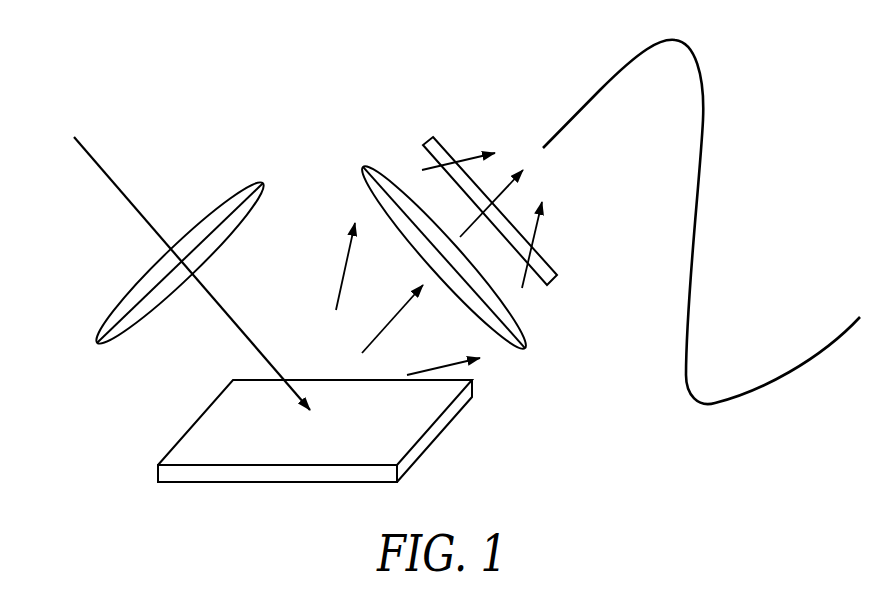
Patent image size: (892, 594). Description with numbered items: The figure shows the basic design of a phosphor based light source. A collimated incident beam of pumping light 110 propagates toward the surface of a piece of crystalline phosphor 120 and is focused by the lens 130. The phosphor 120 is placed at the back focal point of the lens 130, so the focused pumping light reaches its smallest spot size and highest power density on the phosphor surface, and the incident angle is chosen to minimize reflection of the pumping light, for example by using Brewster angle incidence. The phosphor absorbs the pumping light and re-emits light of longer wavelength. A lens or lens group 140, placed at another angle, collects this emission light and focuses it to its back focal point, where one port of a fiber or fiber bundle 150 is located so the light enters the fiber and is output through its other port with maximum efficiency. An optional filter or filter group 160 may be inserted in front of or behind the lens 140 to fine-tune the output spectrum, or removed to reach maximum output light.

The collimated incident beam of pumping light 110 is at (107, 177).
The crystalline phosphor 120 is at (188, 452).
The lens 130 is at (112, 316).
The lens or lens group 140 is at (527, 347).
The fiber or fiber bundle 150 is at (705, 117).
The filter or filter group 160 is at (447, 152).